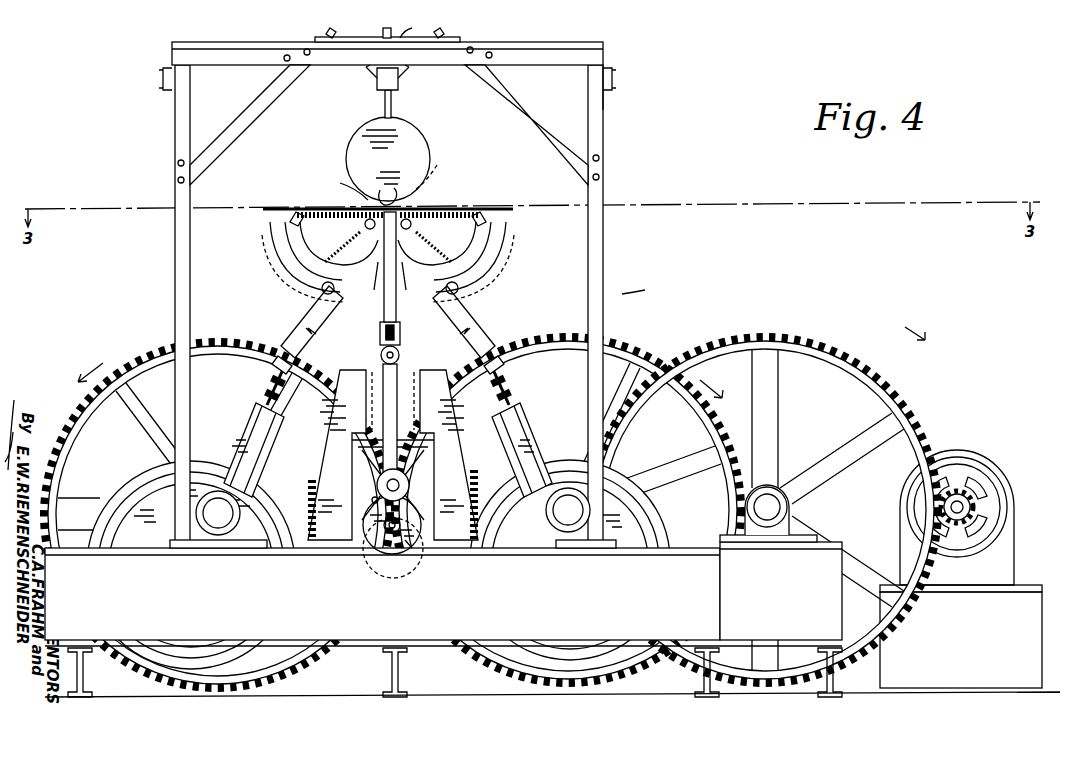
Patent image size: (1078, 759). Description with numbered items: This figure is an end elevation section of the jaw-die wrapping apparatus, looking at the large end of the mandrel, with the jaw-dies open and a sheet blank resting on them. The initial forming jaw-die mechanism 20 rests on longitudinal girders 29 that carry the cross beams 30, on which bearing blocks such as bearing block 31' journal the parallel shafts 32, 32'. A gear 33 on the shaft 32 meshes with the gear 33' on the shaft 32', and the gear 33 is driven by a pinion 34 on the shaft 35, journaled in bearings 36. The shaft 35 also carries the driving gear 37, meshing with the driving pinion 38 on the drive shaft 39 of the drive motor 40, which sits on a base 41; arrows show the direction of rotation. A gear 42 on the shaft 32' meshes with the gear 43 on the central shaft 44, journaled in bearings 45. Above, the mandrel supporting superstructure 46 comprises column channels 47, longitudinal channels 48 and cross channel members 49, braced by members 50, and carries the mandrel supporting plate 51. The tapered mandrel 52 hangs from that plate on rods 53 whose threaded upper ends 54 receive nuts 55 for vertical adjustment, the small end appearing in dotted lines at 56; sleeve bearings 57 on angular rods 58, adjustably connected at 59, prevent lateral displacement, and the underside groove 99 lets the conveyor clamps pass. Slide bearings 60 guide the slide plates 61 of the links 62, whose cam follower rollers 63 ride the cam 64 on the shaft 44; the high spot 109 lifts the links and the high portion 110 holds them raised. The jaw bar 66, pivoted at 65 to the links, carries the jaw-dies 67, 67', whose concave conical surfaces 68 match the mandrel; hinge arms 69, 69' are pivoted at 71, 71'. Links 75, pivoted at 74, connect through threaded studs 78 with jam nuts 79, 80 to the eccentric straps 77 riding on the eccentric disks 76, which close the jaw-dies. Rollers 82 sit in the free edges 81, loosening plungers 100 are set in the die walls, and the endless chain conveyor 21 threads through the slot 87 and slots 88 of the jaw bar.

The initial forming jaw-die mechanism 20 is at (647, 284).
The endless chain conveyor 21 is at (415, 208).
The girders 29 is at (84, 676).
The cross beams 30 is at (443, 597).
The bearing block 31' is at (218, 558).
The shaft 32 is at (568, 510).
The shaft 32' is at (218, 513).
The gear 33 is at (568, 498).
The gear 33' is at (217, 502).
The pinion 34 is at (790, 497).
The shaft 35 is at (767, 507).
The bearings 36 is at (783, 542).
The driving gear 37 is at (920, 418).
The driving pinion 38 is at (972, 498).
The drive shaft 39 is at (957, 525).
The mechanism drive motor 40 is at (1014, 548).
The base 41 is at (961, 636).
The gear 42 is at (258, 414).
The gear 43 is at (314, 478).
The shaft 44 is at (394, 535).
The bearings 45 is at (368, 552).
The mandrel supporting superstructure 46 is at (604, 108).
The column channels 47 is at (175, 262).
The longitudinal channels 48 is at (162, 80).
The cross channel members 49 is at (313, 65).
The brace members 50 is at (240, 112).
The mandrel supporting plate 51 is at (370, 37).
The mandrel 52 is at (388, 159).
The rods 53 is at (391, 104).
The threaded upper ends 54 is at (391, 34).
The nuts 55 is at (412, 28).
The small end of mandrel 56 is at (430, 164).
The sleeve bearing 57 is at (382, 92).
The angular rods 58 is at (371, 73).
The adjustable connection 59 is at (331, 30).
The slide bearings 60 is at (448, 444).
The slide plates 61 is at (381, 355).
The links 62 is at (383, 394).
The cam follower roller 63 is at (393, 485).
The cam 64 is at (415, 515).
The pivot 65 is at (400, 335).
The jaw bar 66 is at (396, 298).
The jaw-die 67 is at (473, 268).
The jaw-die 67' is at (298, 268).
The concave conical curve 68 is at (388, 249).
The hinge arm 69 is at (340, 201).
The hinge arm 69' is at (404, 277).
The hinge pivot 71 is at (373, 283).
The hinge pivot 71' is at (439, 200).
The pivot 74 is at (330, 326).
The link 75 is at (321, 288).
The eccentric disks 76 is at (392, 518).
The eccentric straps 77 is at (118, 495).
The threaded studs 78 is at (272, 378).
The locking jam nut 79 is at (266, 408).
The locking jam nut 80 is at (283, 354).
The free longitudinal edges 81 is at (278, 233).
The rollers 82 is at (300, 212).
The slot 87 is at (343, 184).
The slots 88 is at (384, 330).
The groove 99 is at (380, 192).
The loosening plungers 100 is at (310, 252).
The high spot of cam 109 is at (371, 500).
The high portion of cam 110 is at (412, 548).